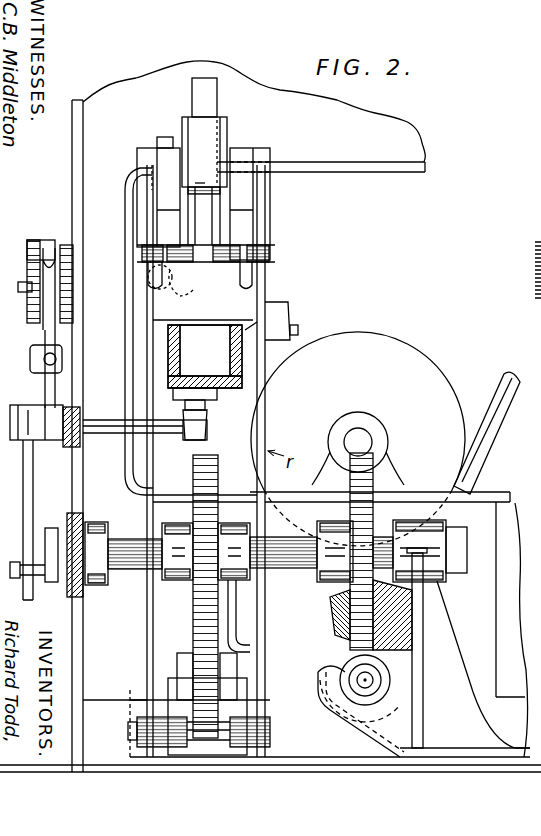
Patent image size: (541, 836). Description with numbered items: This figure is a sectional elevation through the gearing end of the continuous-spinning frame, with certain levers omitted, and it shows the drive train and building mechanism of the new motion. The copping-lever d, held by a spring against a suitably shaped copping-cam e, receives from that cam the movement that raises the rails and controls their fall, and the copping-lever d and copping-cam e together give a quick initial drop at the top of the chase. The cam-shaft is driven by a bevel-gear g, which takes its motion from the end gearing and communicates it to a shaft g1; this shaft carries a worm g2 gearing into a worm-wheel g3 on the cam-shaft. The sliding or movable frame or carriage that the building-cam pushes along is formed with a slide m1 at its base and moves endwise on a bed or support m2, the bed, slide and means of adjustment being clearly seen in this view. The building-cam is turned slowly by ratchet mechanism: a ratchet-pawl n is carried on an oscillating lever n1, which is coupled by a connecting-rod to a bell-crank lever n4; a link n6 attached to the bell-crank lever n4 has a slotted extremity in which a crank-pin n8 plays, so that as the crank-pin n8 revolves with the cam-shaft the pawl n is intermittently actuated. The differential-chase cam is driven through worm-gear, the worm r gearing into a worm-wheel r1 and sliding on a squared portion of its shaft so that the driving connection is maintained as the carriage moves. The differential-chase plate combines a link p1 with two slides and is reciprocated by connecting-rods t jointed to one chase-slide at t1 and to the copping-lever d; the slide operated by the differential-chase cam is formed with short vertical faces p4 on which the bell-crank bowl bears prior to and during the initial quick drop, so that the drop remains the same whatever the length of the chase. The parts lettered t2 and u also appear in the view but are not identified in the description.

The worm-wheel r1 is at (160, 143).
The short vertical faces p4 is at (196, 183).
The link p1 is at (205, 222).
The crosshead guide t2 is at (160, 258).
The joint t1 is at (265, 258).
The worm r is at (182, 298).
The slide m1 is at (257, 335).
The bed or support m2 is at (217, 360).
The ratchet-pawl n is at (50, 228).
The pin u is at (24, 298).
The oscillating lever n1 is at (56, 332).
The bell-crank lever n4 is at (48, 390).
The link n6 is at (30, 477).
The crank-pin n8 is at (17, 566).
The connecting-rods t is at (151, 520).
The copping-cam e is at (205, 595).
The copping-lever d is at (198, 712).
The bevel-gear g is at (343, 625).
The worm-wheel g3 is at (348, 590).
The shaft g1 is at (368, 680).
The worm g2 is at (408, 720).